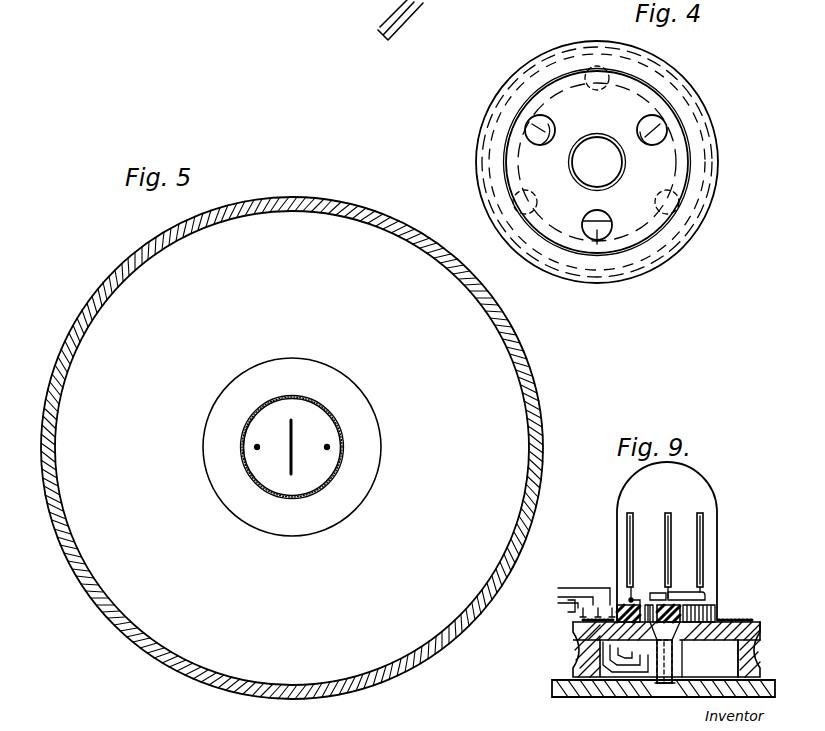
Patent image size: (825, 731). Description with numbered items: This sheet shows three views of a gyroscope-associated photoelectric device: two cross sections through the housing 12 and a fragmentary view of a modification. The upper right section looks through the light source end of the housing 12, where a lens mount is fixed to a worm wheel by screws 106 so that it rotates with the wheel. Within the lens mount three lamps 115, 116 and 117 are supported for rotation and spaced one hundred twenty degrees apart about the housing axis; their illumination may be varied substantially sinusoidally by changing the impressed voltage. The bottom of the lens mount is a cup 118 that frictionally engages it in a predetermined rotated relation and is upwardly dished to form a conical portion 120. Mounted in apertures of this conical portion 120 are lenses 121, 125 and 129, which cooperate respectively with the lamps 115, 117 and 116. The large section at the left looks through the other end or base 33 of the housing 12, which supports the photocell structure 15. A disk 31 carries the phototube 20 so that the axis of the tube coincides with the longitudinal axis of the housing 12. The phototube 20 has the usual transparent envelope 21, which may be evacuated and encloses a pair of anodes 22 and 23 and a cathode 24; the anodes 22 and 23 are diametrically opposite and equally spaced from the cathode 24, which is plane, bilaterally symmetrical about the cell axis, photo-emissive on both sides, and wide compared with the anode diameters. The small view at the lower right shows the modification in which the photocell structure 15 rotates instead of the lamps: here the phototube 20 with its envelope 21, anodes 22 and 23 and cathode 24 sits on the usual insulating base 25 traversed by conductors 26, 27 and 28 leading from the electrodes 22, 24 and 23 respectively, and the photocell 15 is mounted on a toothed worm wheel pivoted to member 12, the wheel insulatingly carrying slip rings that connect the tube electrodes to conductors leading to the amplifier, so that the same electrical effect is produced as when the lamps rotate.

In FIG. 5, the housing 12 is at (312, 198).
In FIG. 9, the housing 12 is at (692, 697).
In FIG. 9, the photocell structure 15 is at (730, 557).
In FIG. 9, the phototube 20 is at (662, 492).
In FIG. 5, the transparent envelope 21 is at (320, 410).
In FIG. 9, the transparent envelope 21 is at (617, 500).
In FIG. 5, the anode 22 is at (258, 446).
In FIG. 9, the anode 22 is at (627, 531).
In FIG. 5, the anode 23 is at (326, 448).
In FIG. 9, the anode 23 is at (704, 520).
In FIG. 5, the cathode 24 is at (294, 430).
In FIG. 9, the cathode 24 is at (670, 518).
In FIG. 9, the insulating base 25 is at (718, 606).
In FIG. 9, the conductor 26 is at (634, 598).
In FIG. 9, the conductor 27 is at (665, 597).
In FIG. 9, the conductor 28 is at (684, 592).
In FIG. 5, the disk 31 is at (262, 372).
In FIG. 5, the base 33 is at (457, 362).
In FIG. 4, the screws 106 is at (620, 72).
In FIG. 4, the lamp 115 is at (492, 118).
In FIG. 4, the lamp 116 is at (576, 262).
In FIG. 4, the lamp 117 is at (690, 95).
In FIG. 4, the cup 118 is at (713, 162).
In FIG. 4, the conical portion 120 is at (655, 176).
In FIG. 4, the lens 121 is at (556, 128).
In FIG. 4, the lens 125 is at (640, 120).
In FIG. 4, the lens 129 is at (608, 214).